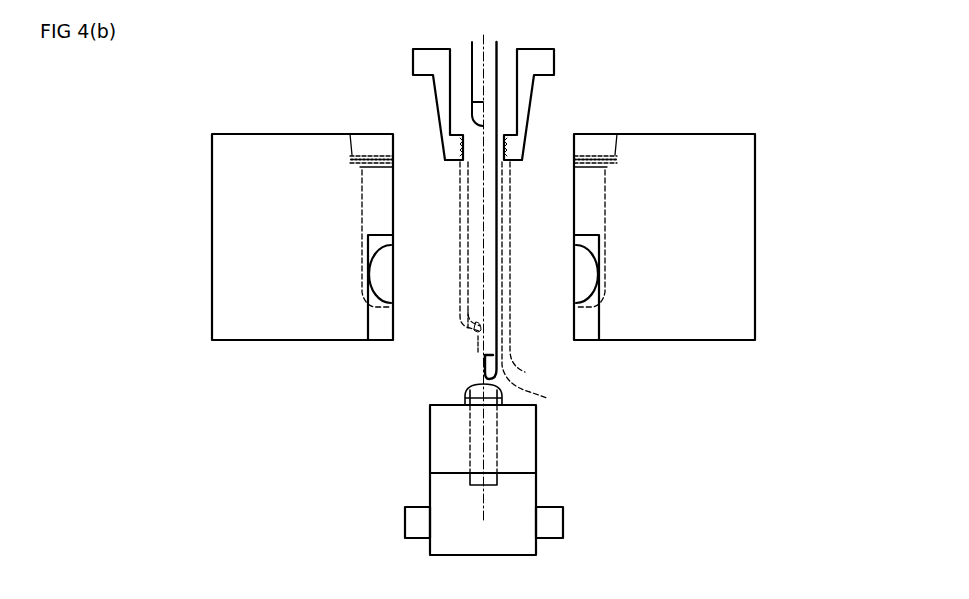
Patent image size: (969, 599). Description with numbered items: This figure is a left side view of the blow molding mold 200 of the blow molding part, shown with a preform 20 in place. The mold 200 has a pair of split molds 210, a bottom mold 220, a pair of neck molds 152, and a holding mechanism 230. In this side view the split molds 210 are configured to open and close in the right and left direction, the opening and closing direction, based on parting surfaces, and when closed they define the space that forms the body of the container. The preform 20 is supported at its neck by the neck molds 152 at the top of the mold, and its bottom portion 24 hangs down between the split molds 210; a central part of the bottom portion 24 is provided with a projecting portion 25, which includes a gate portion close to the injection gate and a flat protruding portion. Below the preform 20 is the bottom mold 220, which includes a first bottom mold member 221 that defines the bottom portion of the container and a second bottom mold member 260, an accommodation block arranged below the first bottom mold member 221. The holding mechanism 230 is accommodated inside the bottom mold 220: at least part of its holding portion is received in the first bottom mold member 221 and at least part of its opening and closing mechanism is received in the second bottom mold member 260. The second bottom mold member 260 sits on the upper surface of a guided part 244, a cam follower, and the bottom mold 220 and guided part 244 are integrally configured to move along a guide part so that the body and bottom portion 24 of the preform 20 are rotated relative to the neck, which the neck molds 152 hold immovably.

The blow molding mold 200 is at (182, 198).
The split molds 210 is at (267, 342).
The neck molds 152 is at (433, 107).
The preform 20 is at (468, 231).
The bottom portion 24 is at (475, 338).
The projecting portion 25 is at (480, 352).
The bottom mold 220 is at (655, 358).
The first bottom mold member 221 is at (500, 380).
The holding mechanism 230 is at (506, 372).
The second bottom mold member 260 is at (538, 435).
The guided part 244 is at (564, 521).